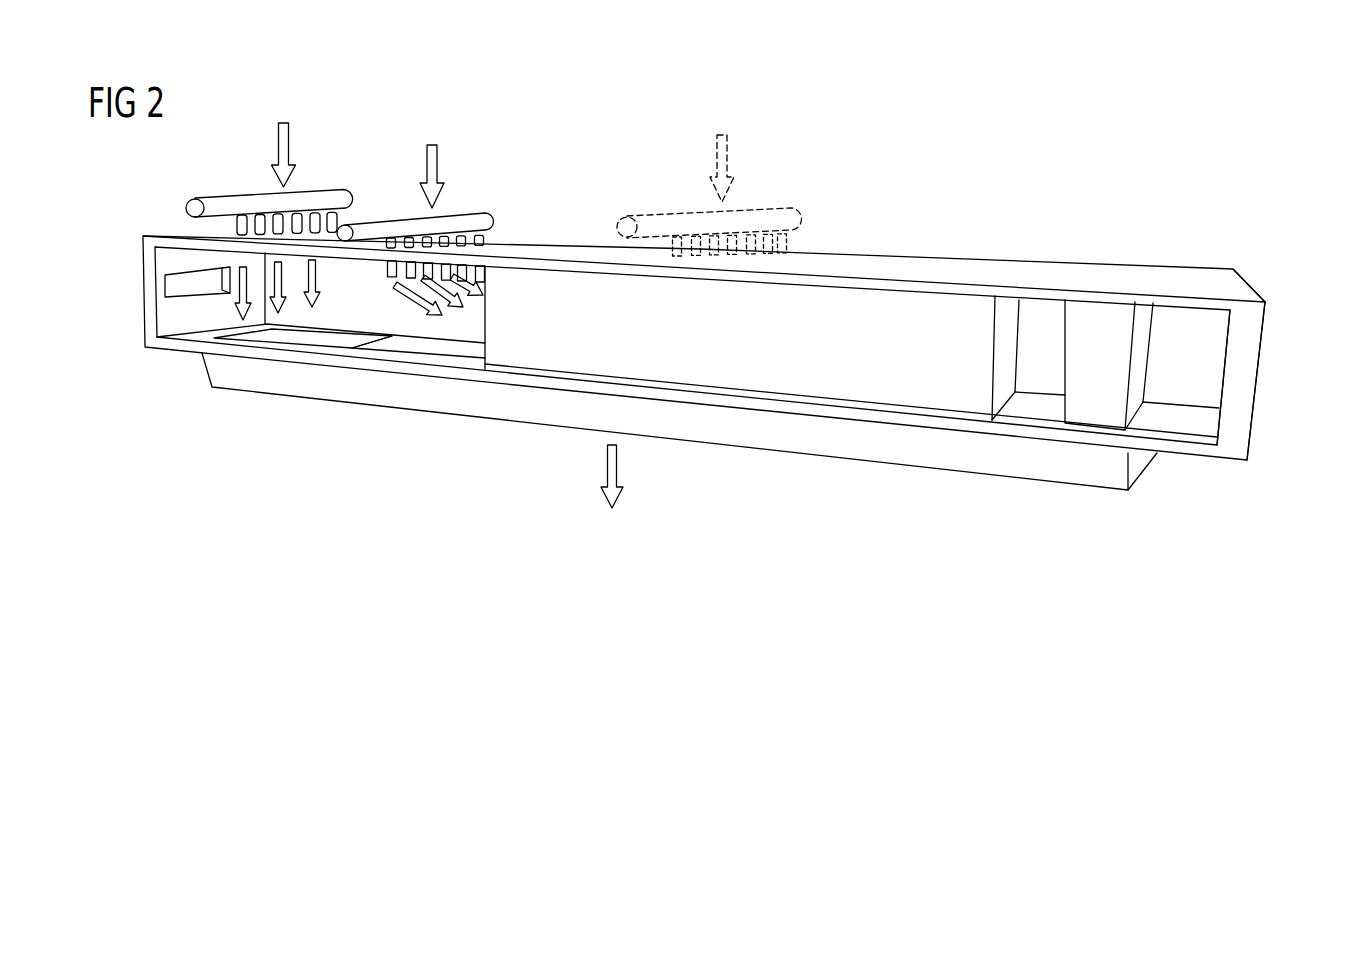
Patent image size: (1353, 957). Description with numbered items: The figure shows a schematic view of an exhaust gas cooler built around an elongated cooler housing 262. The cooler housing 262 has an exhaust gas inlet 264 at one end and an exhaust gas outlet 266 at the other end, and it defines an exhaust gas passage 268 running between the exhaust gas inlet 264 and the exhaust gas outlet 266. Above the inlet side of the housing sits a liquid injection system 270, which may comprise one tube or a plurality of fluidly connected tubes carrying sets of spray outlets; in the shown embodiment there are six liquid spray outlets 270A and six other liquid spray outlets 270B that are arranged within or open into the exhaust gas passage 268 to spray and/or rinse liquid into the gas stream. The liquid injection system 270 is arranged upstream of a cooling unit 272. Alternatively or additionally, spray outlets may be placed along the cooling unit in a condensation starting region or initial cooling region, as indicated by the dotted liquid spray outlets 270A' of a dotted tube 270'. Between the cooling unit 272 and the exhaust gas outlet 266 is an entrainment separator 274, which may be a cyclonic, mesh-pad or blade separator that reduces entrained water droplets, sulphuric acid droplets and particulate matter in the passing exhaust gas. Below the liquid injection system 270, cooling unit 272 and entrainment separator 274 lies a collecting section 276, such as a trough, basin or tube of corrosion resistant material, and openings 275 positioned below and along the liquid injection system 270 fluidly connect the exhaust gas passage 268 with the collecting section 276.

The cooler housing 262 is at (857, 258).
The exhaust gas inlet 264 is at (182, 284).
The exhaust gas outlet 266 is at (1242, 385).
The exhaust gas passage 268 is at (345, 305).
The liquid injection system 270 is at (415, 193).
The liquid spray outlet 270A is at (472, 288).
The other liquid spray outlet 270B is at (252, 217).
The alternative spray bar 270' is at (709, 199).
The dotted liquid spray outlets 270A' is at (737, 211).
The cooling unit 272 is at (922, 302).
The entrainment separator 274 is at (1105, 312).
The openings 275 is at (430, 348).
The collecting section 276 is at (777, 445).